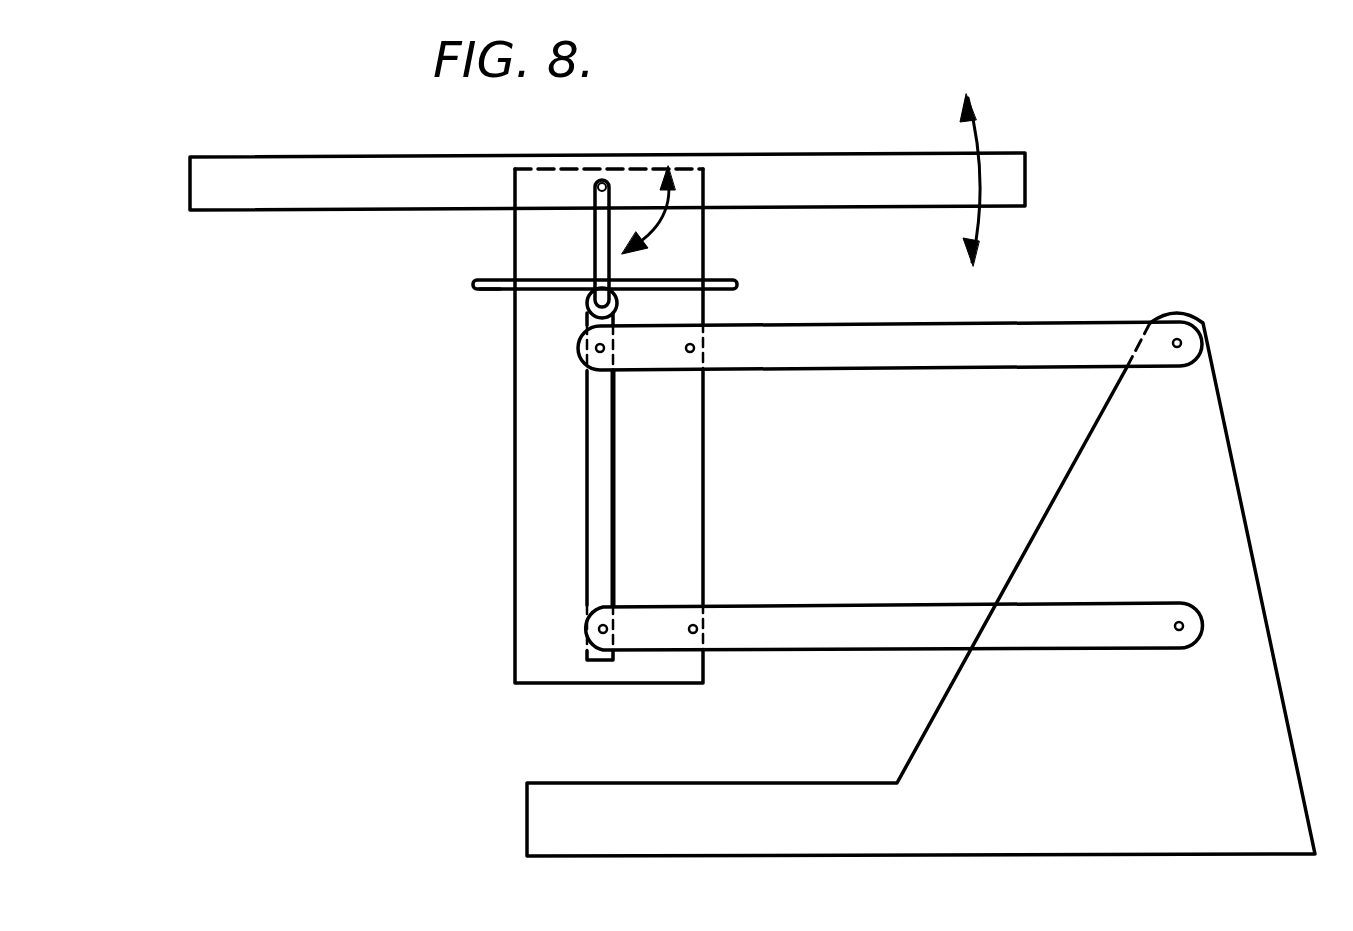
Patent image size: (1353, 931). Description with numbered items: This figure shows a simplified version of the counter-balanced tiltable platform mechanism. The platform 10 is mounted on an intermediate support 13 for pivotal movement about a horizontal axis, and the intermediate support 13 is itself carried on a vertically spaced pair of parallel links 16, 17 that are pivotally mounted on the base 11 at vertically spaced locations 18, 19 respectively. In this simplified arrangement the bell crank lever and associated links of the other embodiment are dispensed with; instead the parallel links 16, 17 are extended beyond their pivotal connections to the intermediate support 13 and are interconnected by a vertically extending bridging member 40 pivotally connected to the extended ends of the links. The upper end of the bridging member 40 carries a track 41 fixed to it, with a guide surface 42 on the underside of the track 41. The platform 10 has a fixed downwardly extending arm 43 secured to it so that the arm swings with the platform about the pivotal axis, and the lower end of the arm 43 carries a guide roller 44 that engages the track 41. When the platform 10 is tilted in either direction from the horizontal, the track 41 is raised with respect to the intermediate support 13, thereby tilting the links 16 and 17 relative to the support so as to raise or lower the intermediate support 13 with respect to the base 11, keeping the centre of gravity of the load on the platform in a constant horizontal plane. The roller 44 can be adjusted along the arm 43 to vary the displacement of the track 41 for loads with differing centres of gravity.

The platform 10 is at (213, 167).
The base 11 is at (527, 800).
The intermediate support 13 is at (523, 470).
The upper parallel link 16 is at (858, 360).
The lower parallel link 17 is at (855, 613).
The pivotal mounting location 18 is at (1182, 340).
The pivotal mounting location 19 is at (1184, 623).
The bridging member 40 is at (593, 557).
The track 41 is at (473, 284).
The guide surface 42 is at (488, 292).
The arm 43 is at (596, 223).
The guide roller 44 is at (617, 312).